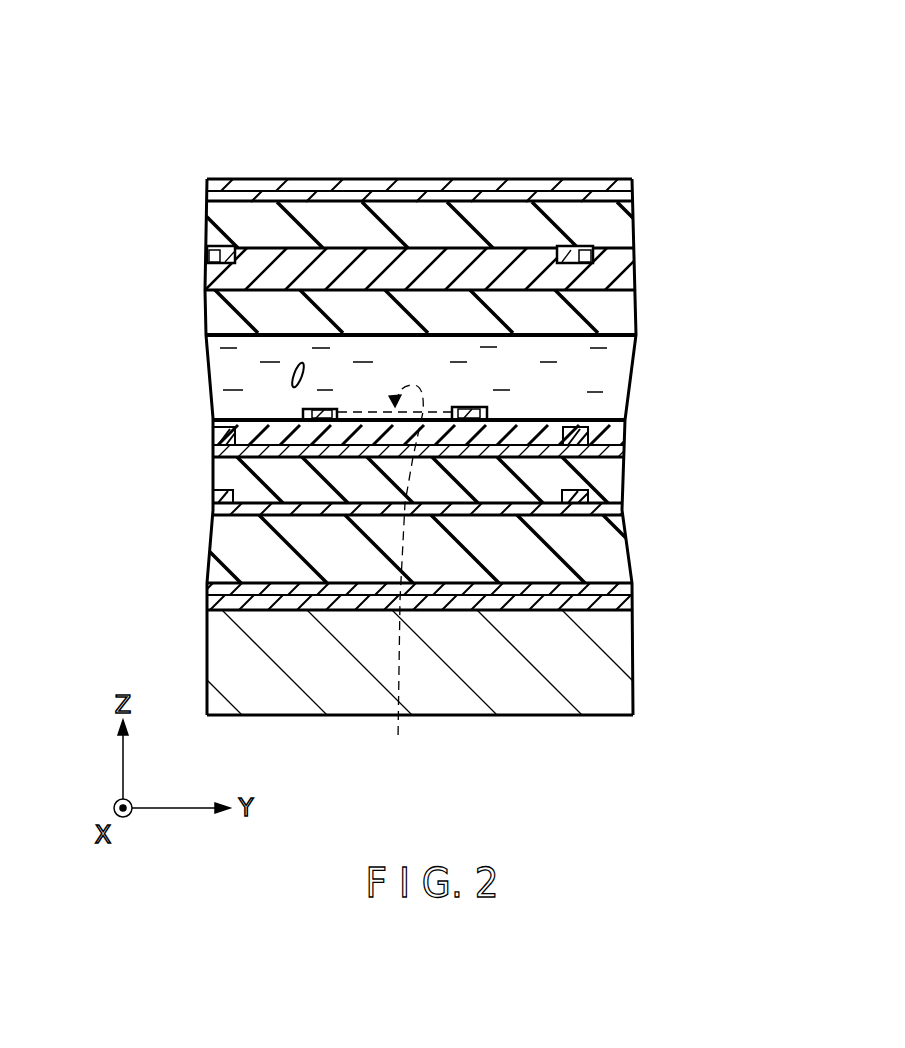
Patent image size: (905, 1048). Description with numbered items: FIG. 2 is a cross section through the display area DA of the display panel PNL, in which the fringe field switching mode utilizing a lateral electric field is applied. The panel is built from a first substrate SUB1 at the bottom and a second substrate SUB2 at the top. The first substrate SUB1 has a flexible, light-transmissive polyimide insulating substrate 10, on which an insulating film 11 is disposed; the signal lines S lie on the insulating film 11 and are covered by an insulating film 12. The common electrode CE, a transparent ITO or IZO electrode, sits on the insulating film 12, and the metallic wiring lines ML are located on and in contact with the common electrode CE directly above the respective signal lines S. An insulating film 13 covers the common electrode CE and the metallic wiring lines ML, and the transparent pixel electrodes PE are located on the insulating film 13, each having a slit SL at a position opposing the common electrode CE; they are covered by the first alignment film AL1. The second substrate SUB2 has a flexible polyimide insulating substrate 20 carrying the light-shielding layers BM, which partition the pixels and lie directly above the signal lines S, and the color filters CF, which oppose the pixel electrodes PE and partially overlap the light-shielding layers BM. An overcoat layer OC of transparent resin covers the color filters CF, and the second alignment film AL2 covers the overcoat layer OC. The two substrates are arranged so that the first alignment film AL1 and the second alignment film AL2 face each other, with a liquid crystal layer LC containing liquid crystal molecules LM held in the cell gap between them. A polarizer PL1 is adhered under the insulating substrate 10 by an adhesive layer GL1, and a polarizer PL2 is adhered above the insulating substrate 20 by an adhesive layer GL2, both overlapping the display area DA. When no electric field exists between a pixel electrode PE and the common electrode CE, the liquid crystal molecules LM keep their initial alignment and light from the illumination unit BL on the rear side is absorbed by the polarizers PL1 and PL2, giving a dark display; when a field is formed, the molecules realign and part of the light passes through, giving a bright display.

The display area DA is at (197, 70).
The display panel PNL is at (632, 201).
The first substrate SUB1 is at (207, 583).
The second substrate SUB2 is at (206, 335).
The polarizer (first optical film) PL2 is at (605, 184).
The adhesive layer GL2 is at (620, 195).
The insulating substrate 20 is at (622, 227).
The color filters CF is at (413, 262).
The light-shielding layers BM is at (578, 262).
The overcoat layer OC is at (613, 313).
The second alignment film AL2 is at (618, 340).
The liquid crystal layer LC is at (613, 363).
The liquid crystal molecules LM is at (293, 374).
The pixel electrodes PE is at (333, 405).
The common electrode CE is at (560, 440).
The metallic wiring lines ML is at (583, 430).
The first alignment film AL1 is at (608, 418).
The insulating film 13 is at (618, 432).
The insulating film 12 is at (225, 472).
The insulating film 11 is at (618, 510).
The insulating substrate 10 is at (620, 562).
The adhesive layer GL1 is at (627, 587).
The polarizer (second optical film) PL1 is at (615, 603).
The illumination unit BL is at (625, 660).
The signal lines S is at (583, 735).
The slit SL is at (406, 575).